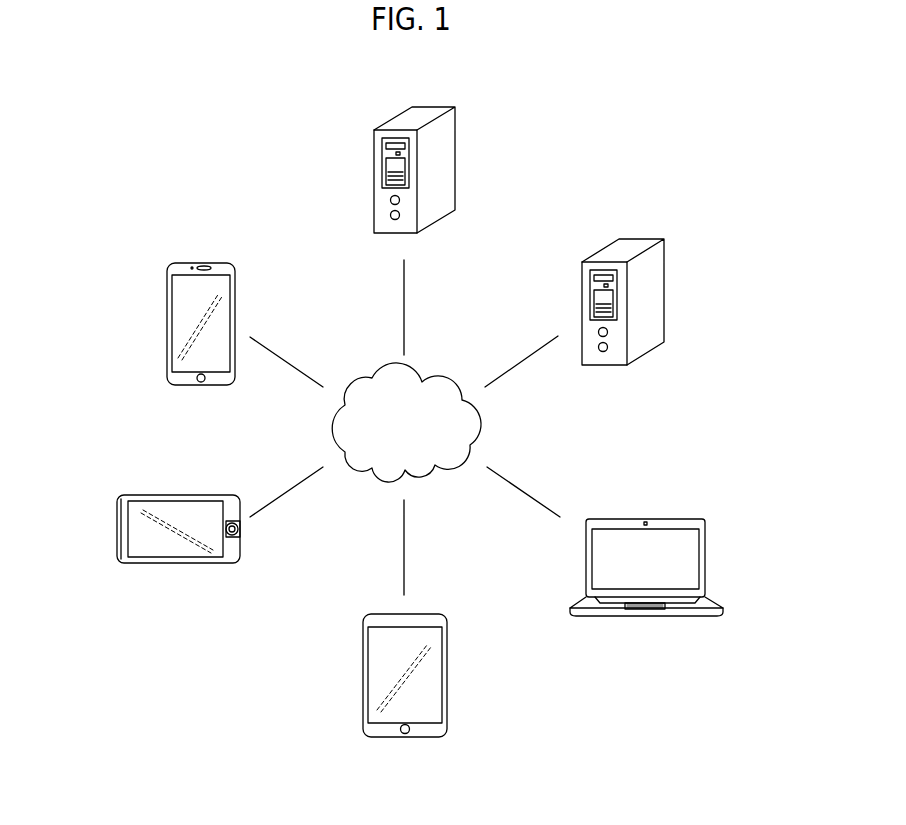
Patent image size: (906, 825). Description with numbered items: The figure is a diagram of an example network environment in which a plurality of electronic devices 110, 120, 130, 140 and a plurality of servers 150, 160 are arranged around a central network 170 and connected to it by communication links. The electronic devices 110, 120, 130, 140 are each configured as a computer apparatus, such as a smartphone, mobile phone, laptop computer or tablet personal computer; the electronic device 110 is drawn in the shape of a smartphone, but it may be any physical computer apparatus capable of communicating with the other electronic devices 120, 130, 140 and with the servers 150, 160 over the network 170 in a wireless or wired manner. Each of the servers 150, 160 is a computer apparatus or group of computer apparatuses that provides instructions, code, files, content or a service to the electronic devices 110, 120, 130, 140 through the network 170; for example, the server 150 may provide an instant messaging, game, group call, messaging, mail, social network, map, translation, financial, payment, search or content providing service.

The electronic device 110 is at (167, 325).
The electronic device 120 is at (117, 528).
The electronic device 130 is at (447, 675).
The electronic device 140 is at (707, 562).
The server 150 is at (666, 290).
The server 160 is at (457, 158).
The network 170 is at (430, 379).